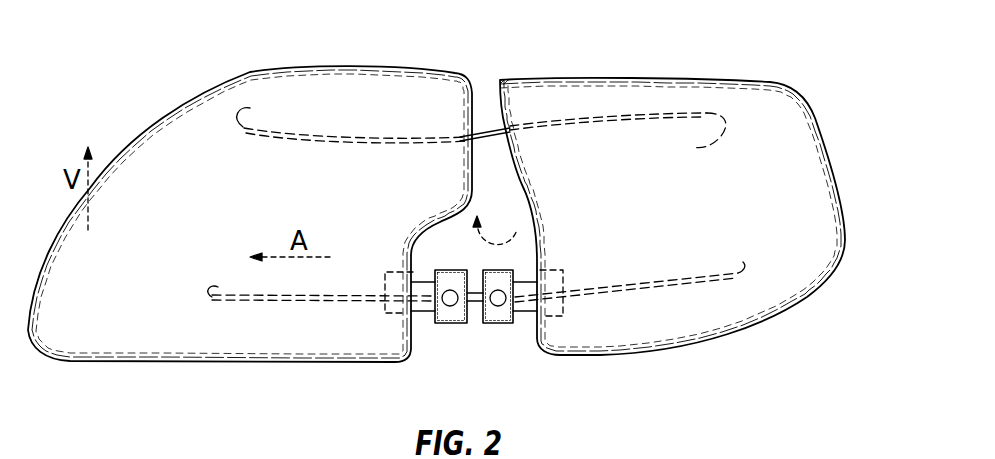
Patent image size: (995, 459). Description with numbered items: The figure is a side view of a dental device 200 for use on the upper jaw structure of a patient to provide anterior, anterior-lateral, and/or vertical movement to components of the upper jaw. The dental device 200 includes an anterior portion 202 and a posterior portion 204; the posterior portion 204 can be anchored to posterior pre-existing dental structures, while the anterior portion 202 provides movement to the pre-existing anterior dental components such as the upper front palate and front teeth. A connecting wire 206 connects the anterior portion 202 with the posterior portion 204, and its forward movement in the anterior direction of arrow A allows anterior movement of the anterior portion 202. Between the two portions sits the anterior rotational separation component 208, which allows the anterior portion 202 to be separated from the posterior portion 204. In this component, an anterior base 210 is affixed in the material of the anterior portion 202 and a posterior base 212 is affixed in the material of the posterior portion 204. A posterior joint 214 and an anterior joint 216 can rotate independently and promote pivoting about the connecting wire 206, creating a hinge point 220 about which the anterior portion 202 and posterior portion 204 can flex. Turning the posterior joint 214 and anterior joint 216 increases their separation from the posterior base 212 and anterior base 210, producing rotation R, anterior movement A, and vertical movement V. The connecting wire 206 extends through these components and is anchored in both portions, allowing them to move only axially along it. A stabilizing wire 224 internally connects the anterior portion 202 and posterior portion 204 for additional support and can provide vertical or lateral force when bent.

The dental device 200 is at (781, 45).
The anterior portion 202 is at (184, 114).
The posterior portion 204 is at (813, 163).
The connecting wire 206 is at (268, 300).
The anterior rotational separation component 208 is at (476, 313).
The anterior base 210 is at (395, 317).
The posterior base 212 is at (558, 277).
The posterior joint 214 is at (495, 320).
The anterior joint 216 is at (451, 270).
The hinge point 220 is at (520, 228).
The stabilizing wire 224 is at (367, 138).